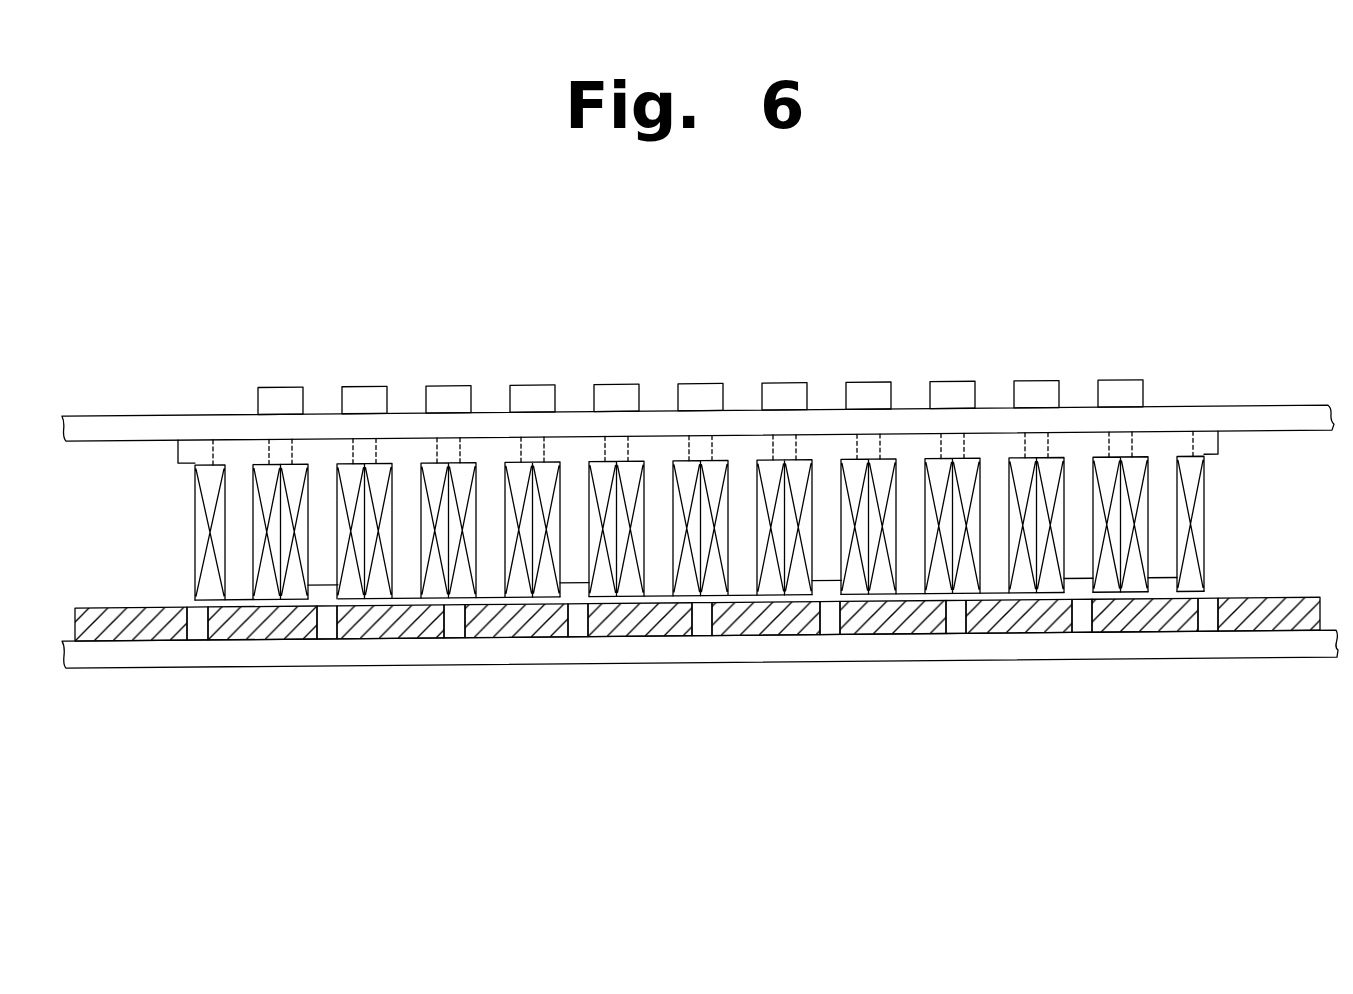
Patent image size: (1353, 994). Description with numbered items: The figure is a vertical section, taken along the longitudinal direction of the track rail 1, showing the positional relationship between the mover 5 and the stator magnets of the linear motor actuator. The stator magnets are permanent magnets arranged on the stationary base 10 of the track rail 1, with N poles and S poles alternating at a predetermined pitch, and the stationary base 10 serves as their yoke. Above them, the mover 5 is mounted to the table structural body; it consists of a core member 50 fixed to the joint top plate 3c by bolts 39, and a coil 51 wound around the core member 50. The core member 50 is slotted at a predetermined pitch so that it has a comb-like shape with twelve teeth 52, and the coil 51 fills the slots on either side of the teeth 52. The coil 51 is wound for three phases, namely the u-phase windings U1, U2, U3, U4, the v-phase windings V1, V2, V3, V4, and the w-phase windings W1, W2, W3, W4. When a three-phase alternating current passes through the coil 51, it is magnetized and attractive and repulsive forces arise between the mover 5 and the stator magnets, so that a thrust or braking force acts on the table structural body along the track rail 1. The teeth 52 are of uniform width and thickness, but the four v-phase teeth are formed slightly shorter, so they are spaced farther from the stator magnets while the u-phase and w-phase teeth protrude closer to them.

The track rail 1 is at (737, 676).
The joint top plate 3c is at (1278, 415).
The mover 5 is at (1252, 501).
The stationary base 10 is at (972, 667).
The bolt 39 is at (279, 388).
The core member 50 is at (199, 440).
The coil 51 is at (858, 590).
The teeth 52 is at (1075, 588).
The u-phase coil U1 is at (264, 478).
The v-phase coil V1 is at (348, 478).
The w-phase coil W1 is at (432, 478).
The u-phase coil U2 is at (516, 478).
The v-phase coil V2 is at (600, 478).
The w-phase coil W2 is at (684, 478).
The u-phase coil U3 is at (768, 478).
The v-phase coil V3 is at (852, 478).
The w-phase coil W3 is at (936, 478).
The u-phase coil U4 is at (1020, 478).
The v-phase coil V4 is at (1104, 478).
The w-phase coil W4 is at (1188, 478).